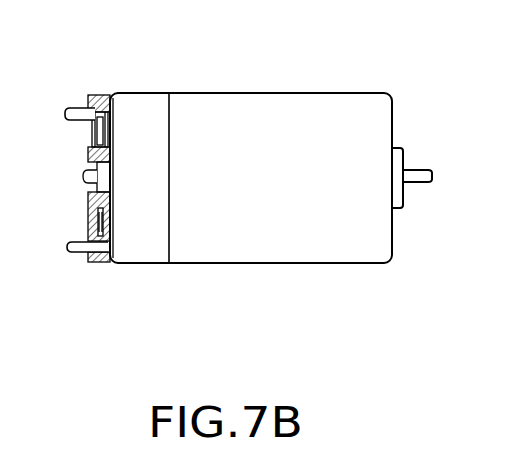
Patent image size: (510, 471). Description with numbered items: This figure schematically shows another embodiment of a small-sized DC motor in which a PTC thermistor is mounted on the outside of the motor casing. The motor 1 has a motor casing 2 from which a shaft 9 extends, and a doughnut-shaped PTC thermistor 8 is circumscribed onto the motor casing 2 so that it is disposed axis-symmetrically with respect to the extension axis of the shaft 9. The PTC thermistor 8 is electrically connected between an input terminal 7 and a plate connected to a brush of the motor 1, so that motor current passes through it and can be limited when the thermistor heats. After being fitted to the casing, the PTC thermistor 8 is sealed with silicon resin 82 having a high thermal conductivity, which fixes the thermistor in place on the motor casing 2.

The motor 1 is at (287, 93).
The motor casing 2 is at (145, 93).
The input terminal 7 is at (66, 108).
The PTC thermistor 8 is at (104, 108).
The shaft 9 is at (83, 185).
The silicon resin 82 is at (88, 210).